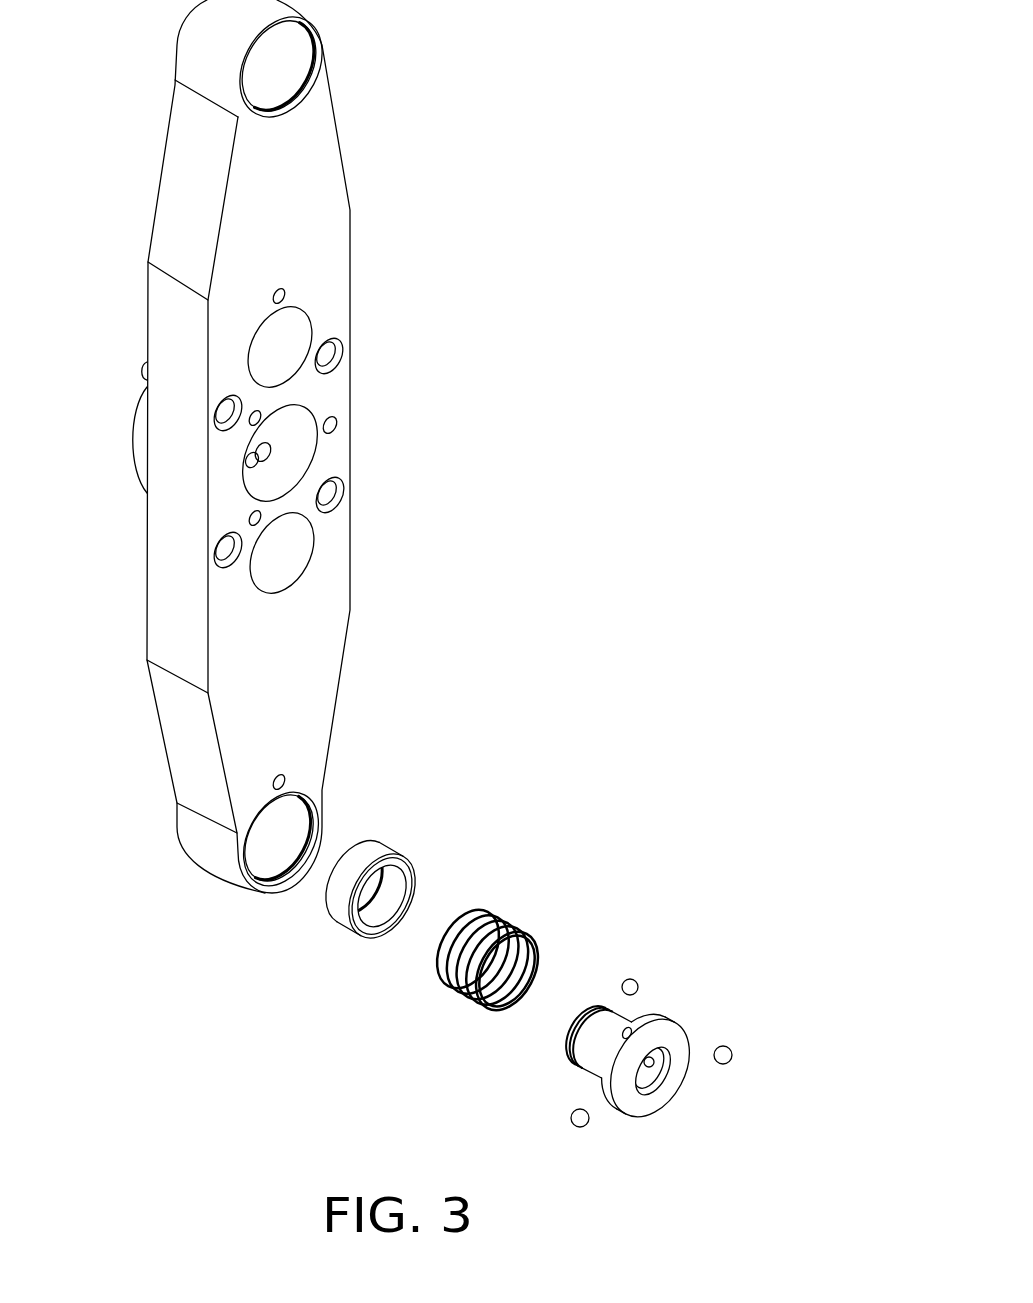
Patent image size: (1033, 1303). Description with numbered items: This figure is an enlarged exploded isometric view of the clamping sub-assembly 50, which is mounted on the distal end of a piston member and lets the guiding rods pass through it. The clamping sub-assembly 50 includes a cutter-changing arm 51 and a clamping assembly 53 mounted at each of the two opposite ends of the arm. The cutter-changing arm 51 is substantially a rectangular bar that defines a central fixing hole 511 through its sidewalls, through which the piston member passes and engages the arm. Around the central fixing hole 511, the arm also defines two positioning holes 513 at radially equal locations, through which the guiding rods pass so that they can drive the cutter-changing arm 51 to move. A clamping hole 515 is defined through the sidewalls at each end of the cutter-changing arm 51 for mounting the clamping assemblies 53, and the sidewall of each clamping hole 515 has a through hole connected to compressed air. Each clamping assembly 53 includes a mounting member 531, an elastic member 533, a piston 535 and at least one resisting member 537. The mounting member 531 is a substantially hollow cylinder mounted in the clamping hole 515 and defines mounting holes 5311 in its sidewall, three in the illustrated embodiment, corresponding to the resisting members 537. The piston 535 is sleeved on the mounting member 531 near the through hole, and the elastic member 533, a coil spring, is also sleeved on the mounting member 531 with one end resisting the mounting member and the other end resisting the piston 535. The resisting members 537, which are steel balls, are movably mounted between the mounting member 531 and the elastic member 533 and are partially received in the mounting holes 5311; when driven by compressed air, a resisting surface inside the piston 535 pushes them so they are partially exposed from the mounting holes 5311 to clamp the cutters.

The clamping sub-assembly 50 is at (489, 70).
The cutter-changing arm 51 is at (510, 143).
The central fixing hole 511 is at (302, 445).
The positioning holes 513 is at (292, 333).
The clamping hole 515 is at (282, 63).
The clamping assembly 53 is at (538, 780).
The mounting member 531 is at (675, 1040).
The mounting hole 5311 is at (622, 1032).
The elastic member 533 is at (502, 910).
The piston 535 is at (390, 845).
The resisting member 537 is at (637, 980).